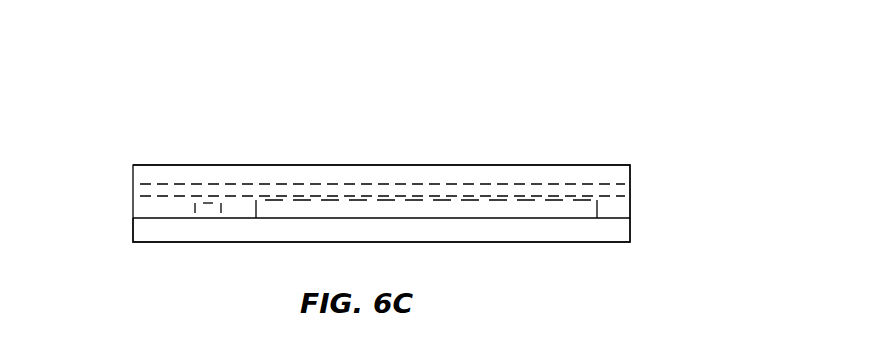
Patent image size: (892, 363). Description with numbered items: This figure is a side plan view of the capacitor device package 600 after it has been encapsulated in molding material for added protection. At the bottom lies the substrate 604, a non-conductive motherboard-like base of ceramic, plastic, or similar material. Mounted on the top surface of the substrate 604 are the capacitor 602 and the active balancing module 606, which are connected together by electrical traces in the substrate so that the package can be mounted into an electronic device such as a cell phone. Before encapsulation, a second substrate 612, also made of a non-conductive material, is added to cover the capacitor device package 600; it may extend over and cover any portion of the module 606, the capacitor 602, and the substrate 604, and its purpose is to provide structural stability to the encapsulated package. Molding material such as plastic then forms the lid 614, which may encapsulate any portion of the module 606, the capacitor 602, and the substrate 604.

The capacitor device package 600 is at (656, 85).
The capacitor 602 is at (598, 205).
The substrate 604 is at (632, 232).
The active balancing module 606 is at (195, 209).
The substrate 612 is at (632, 182).
The lid 614 is at (633, 166).